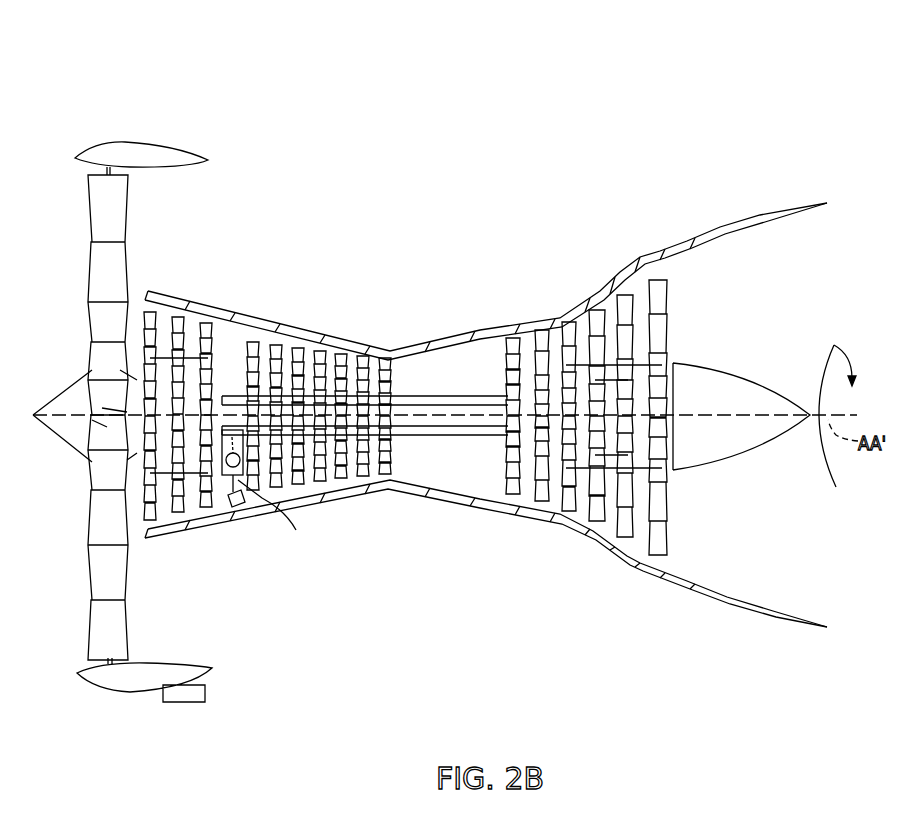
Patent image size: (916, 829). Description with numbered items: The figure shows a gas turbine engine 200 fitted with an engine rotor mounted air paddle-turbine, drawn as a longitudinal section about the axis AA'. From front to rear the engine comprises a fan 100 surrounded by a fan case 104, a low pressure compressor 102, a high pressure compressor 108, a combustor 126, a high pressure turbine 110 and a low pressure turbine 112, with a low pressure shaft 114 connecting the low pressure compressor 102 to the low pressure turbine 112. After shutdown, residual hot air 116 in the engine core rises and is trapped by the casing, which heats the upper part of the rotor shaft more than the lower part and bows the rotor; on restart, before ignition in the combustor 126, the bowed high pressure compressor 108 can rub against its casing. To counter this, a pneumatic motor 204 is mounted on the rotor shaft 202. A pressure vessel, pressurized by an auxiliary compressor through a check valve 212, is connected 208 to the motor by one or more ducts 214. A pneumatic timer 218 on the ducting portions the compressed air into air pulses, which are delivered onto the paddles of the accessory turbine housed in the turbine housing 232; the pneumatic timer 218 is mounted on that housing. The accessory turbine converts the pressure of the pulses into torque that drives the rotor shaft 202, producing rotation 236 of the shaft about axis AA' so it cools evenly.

The fan 100 is at (126, 215).
The low pressure compressor 102 is at (222, 525).
The fan case 104 is at (160, 145).
The high pressure compressor 108 is at (340, 535).
The high pressure turbine 110 is at (514, 323).
The low pressure turbine 112 is at (622, 283).
The low pressure shaft 114 is at (425, 410).
The residual hot air 116 is at (468, 365).
The combustor 126 is at (410, 440).
The gas turbine engine 200 is at (840, 180).
The rotor shaft 202 is at (238, 400).
The pneumatic motor 204 is at (484, 463).
The connection 208 is at (697, 232).
The check valve 212 is at (190, 702).
The ducts 214 is at (274, 519).
The pneumatic timer 218 is at (240, 505).
The turbine housing 232 is at (230, 478).
The rotation 236 is at (832, 345).